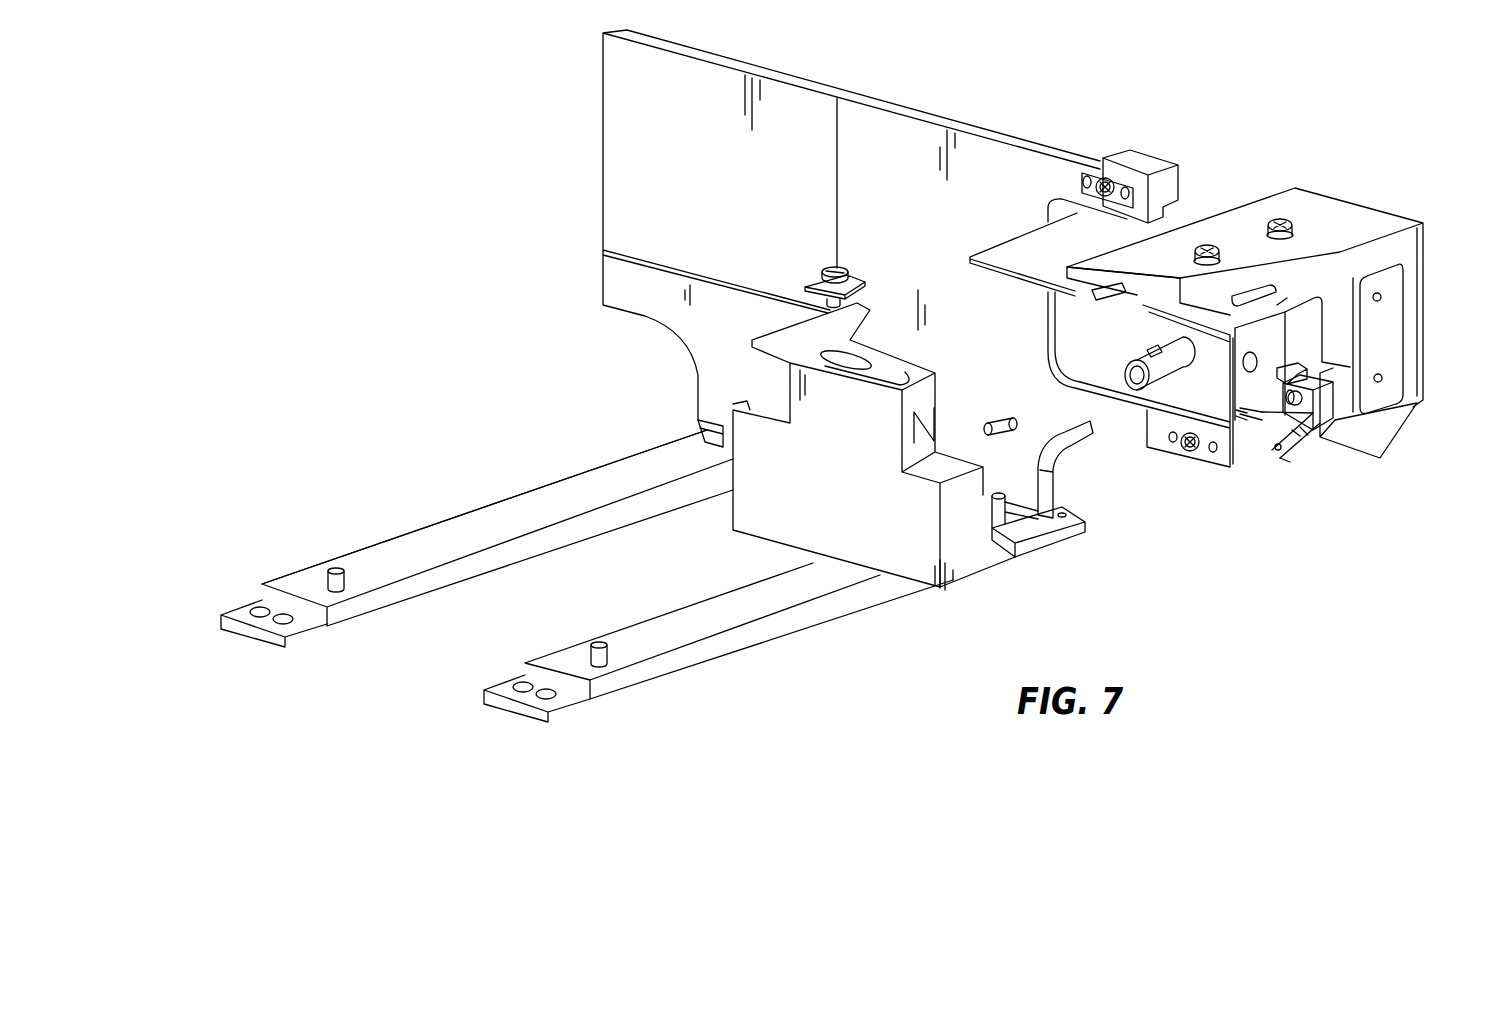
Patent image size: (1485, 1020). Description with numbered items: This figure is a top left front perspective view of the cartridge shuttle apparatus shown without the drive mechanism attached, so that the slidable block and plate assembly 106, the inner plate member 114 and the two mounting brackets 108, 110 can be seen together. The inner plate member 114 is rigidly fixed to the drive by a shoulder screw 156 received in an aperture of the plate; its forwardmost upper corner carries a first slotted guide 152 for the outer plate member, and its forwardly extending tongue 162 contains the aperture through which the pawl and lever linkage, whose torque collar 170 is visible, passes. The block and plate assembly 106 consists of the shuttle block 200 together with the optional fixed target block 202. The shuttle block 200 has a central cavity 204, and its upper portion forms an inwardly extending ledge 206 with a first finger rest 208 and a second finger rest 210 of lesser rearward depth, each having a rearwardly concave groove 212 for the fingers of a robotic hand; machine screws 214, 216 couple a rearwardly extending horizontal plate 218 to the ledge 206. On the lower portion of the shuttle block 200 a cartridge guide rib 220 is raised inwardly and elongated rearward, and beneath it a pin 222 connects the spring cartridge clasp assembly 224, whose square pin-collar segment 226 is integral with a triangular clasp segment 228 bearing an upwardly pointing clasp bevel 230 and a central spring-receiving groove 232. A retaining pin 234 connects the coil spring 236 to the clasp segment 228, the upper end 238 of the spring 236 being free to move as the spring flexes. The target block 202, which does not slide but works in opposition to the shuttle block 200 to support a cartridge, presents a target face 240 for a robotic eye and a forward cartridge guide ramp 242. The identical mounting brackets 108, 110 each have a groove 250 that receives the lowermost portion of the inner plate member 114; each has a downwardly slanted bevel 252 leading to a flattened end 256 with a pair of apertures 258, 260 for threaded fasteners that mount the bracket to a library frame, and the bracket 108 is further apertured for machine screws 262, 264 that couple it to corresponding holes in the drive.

The slidable block and plate assembly 106 is at (985, 248).
The mounting bracket 108 is at (570, 488).
The mounting bracket 110 is at (730, 600).
The inner plate member 114 is at (650, 155).
The first slotted guide 152 is at (1143, 160).
The shoulder screw 156 is at (1000, 420).
The forwardly extending tongue 162 is at (1095, 408).
The torque collar 170 is at (1150, 350).
The shuttle block 200 is at (1325, 200).
The fixed target block 202 is at (800, 500).
The central cavity 204 is at (1395, 293).
The inwardly extending ledge 206 is at (1320, 278).
The first finger rest 208 is at (1250, 290).
The second finger rest 210 is at (1143, 258).
The groove 212 is at (1135, 296).
The machine screw 214 is at (1205, 245).
The machine screw 216 is at (1283, 215).
The rearwardly extending horizontal plate 218 is at (1037, 247).
The cartridge guide rib 220 is at (1298, 365).
The pin 222 is at (1385, 420).
The spring cartridge clasp assembly 224 is at (1300, 440).
The square pin-collar segment 226 is at (1325, 398).
The triangular clasp segment 228 is at (1290, 470).
The clasp bevel 230 is at (1240, 397).
The central spring-receiving groove 232 is at (1240, 420).
The retaining pin 234 is at (1278, 470).
The coil spring 236 is at (1265, 470).
The upper end of spring 238 is at (1255, 415).
The target face 240 is at (908, 412).
The forward cartridge guide ramp 242 is at (1030, 540).
The groove 250 is at (1080, 515).
The downwardly slanted bevel 252 is at (410, 548).
The flattened end 256 is at (240, 643).
The aperture 258 is at (255, 605).
The aperture 260 is at (305, 628).
The machine screw 262 is at (320, 580).
The machine screw 264 is at (720, 438).